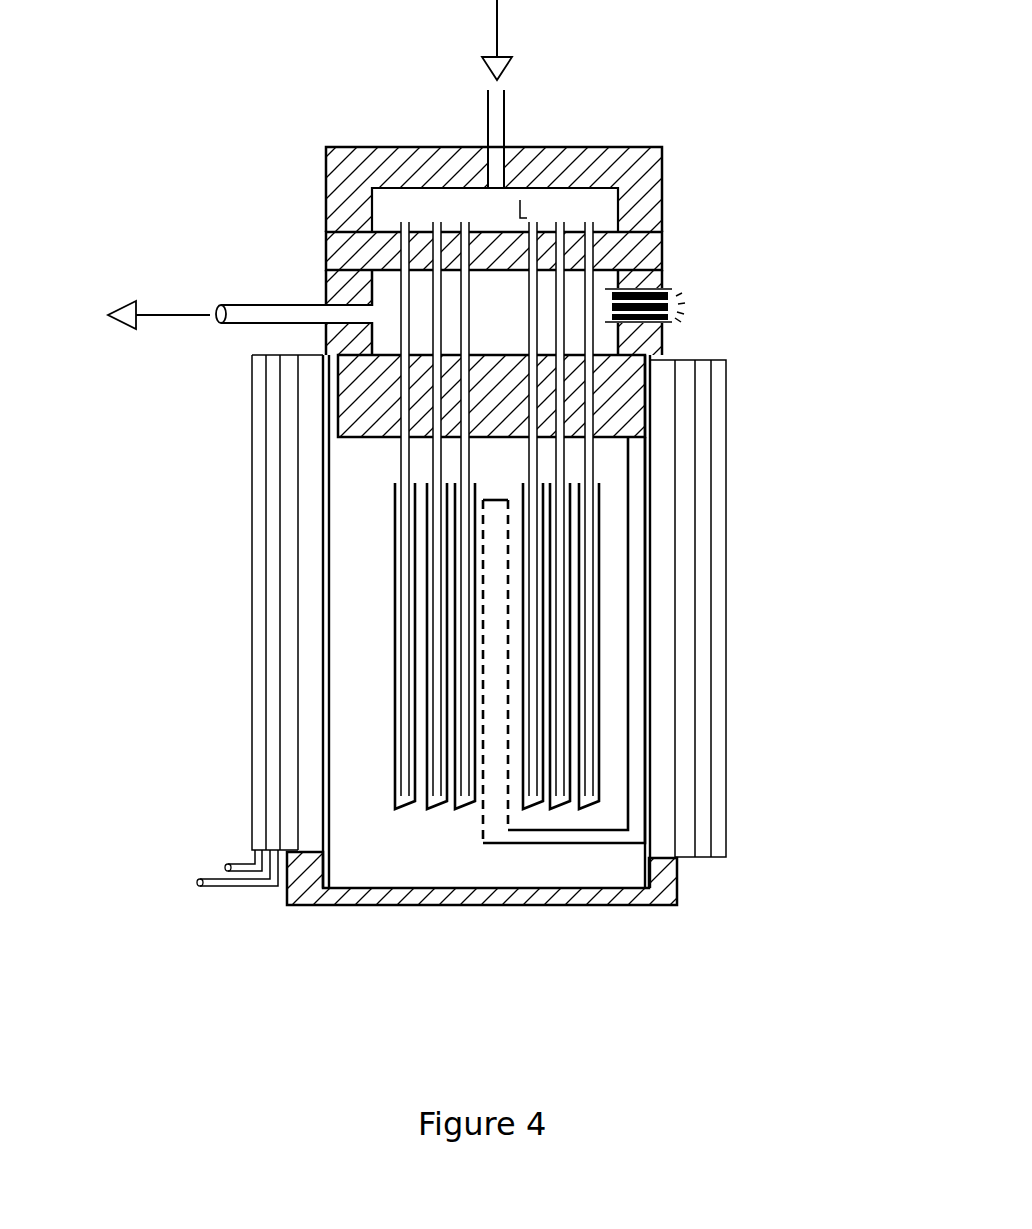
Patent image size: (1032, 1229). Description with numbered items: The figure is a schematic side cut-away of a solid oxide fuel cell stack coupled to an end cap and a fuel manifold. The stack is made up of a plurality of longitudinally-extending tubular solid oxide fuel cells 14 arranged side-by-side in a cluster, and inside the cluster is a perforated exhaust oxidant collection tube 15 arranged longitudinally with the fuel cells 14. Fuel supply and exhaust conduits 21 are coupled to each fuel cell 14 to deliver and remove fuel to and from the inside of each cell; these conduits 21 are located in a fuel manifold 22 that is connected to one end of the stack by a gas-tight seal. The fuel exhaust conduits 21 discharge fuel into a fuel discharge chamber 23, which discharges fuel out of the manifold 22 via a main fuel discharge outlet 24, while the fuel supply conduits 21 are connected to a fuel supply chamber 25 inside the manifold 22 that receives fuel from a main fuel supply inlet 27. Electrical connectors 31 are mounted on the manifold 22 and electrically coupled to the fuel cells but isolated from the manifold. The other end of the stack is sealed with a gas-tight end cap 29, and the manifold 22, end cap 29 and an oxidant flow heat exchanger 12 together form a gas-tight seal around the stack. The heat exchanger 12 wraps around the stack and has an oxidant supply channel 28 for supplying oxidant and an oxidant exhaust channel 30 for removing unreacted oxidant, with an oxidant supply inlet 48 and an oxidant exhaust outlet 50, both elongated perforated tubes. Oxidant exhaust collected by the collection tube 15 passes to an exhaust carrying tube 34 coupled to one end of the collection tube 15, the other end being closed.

The oxidant flow heat exchanger 12 is at (727, 467).
The tubular solid oxide fuel cells 14 is at (393, 583).
The perforated exhaust oxidant collection tube 15 is at (508, 675).
The fuel supply and exhaust conduits 21 is at (521, 352).
The fuel manifold 22 is at (655, 357).
The fuel discharge chamber 23 is at (380, 295).
The main fuel discharge outlet 24 is at (250, 322).
The fuel supply chamber 25 is at (603, 205).
The main fuel supply inlet 27 is at (507, 122).
The oxidant supply channel 28 is at (270, 694).
The end cap 29 is at (675, 906).
The oxidant exhaust channel 30 is at (253, 779).
The electrical connectors 31 is at (686, 290).
The exhaust carrying tube 34 is at (585, 823).
The oxidant supply inlet 48 is at (200, 888).
The oxidant exhaust outlet 50 is at (226, 862).